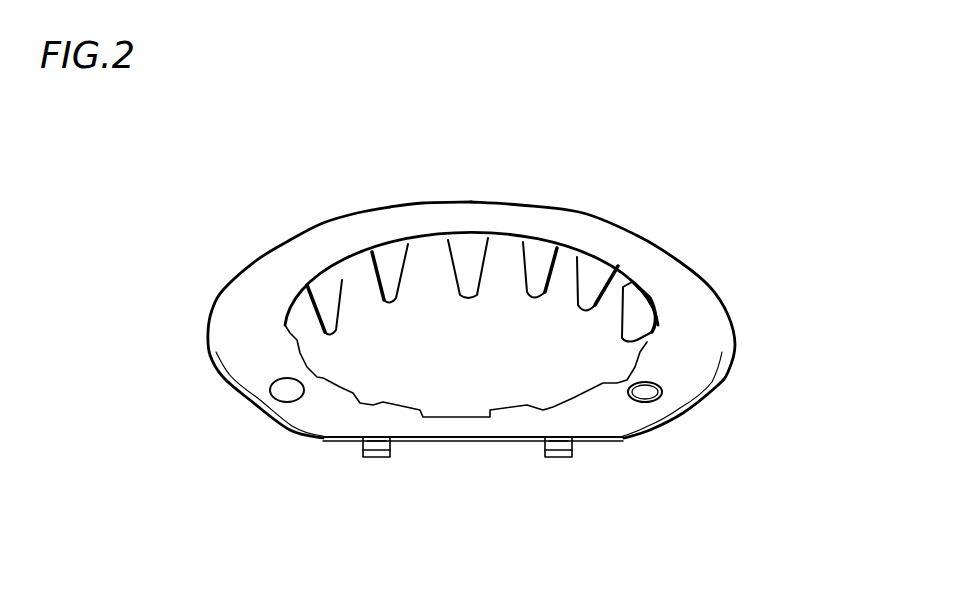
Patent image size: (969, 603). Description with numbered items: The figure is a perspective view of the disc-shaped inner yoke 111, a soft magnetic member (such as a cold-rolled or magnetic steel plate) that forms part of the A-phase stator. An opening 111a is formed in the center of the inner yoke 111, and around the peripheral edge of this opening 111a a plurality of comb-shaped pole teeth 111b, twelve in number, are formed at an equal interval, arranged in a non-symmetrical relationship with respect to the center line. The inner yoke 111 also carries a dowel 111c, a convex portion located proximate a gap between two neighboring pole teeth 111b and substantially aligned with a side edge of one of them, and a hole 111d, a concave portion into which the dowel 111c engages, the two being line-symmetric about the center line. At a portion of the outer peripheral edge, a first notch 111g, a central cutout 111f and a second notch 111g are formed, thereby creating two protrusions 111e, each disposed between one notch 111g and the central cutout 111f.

The inner yoke 111 is at (653, 272).
The opening 111a is at (473, 337).
The pole teeth 111b is at (460, 263).
The dowel 111c is at (287, 390).
The hole 111d is at (647, 388).
The protrusions 111e is at (372, 450).
The central cutout 111f is at (472, 442).
The notch 111g is at (347, 442).